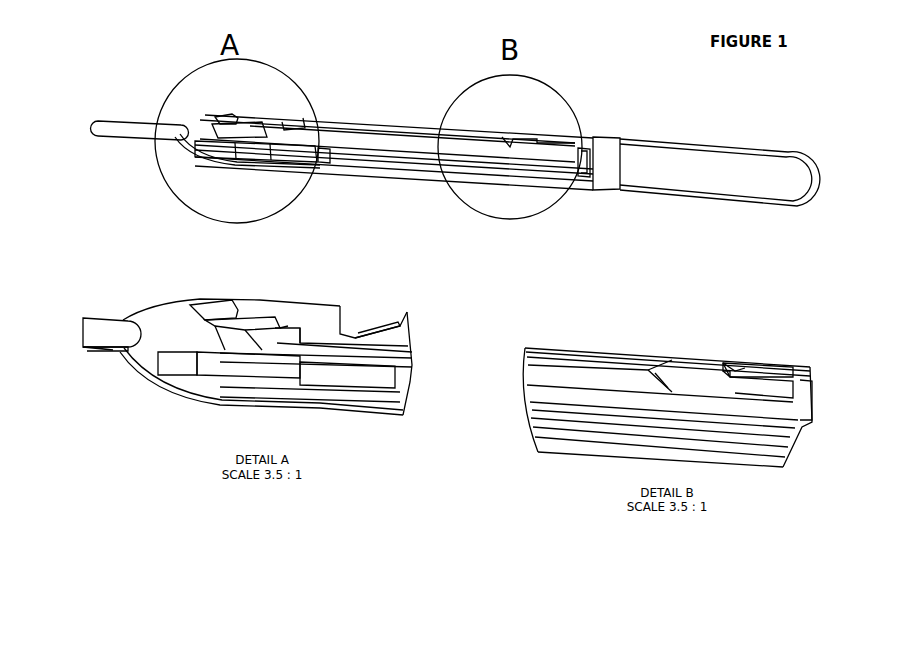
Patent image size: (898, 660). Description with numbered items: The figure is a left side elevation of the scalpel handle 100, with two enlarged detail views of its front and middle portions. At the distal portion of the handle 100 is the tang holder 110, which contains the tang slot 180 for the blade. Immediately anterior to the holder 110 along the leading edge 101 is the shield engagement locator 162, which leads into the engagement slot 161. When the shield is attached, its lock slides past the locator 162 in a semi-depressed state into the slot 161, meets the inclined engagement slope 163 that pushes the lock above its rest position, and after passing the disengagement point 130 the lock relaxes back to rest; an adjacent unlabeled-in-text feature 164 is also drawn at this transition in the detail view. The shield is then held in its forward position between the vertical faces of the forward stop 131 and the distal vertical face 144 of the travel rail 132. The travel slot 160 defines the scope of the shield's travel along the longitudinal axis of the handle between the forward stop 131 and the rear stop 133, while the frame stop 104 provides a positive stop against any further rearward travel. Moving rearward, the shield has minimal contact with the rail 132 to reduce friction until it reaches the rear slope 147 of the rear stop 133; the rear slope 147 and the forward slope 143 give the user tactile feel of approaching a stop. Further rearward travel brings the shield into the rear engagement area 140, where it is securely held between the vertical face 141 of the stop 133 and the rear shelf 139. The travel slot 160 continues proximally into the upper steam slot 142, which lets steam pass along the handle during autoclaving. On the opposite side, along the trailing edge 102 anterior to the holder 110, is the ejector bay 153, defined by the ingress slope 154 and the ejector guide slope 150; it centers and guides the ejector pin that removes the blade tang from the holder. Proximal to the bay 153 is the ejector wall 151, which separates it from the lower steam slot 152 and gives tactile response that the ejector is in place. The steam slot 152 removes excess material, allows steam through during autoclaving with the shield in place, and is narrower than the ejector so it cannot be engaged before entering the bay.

The handle 100 is at (720, 160).
The leading edge 101 is at (429, 118).
The trailing edge 102 is at (446, 190).
The frame stop 104 is at (578, 202).
The tang holder 110 is at (129, 120).
The disengagement point 130 is at (308, 292).
The forward stop 131 is at (288, 325).
The travel rail 132 is at (562, 355).
The rear stop 133 is at (665, 367).
The rear shelf 139 is at (744, 366).
The rear engagement area 140 is at (523, 145).
The vertical face 141 is at (674, 362).
The upper steam slot 142 is at (735, 385).
The forward slope 143 is at (380, 322).
The distal vertical face 144 is at (295, 114).
The rear slope 147 is at (673, 396).
The ejector guide slope 150 is at (182, 363).
The ejector wall 151 is at (341, 145).
The lower steam slot 152 is at (655, 420).
The ejector bay 153 is at (222, 372).
The ingress slope 154 is at (355, 373).
The travel slot 160 is at (395, 140).
The engagement slot 161 is at (257, 316).
The shield engagement locator 162 is at (219, 318).
The engagement slope 163 is at (281, 304).
The step 164 is at (302, 333).
The tang slot 180 is at (74, 356).